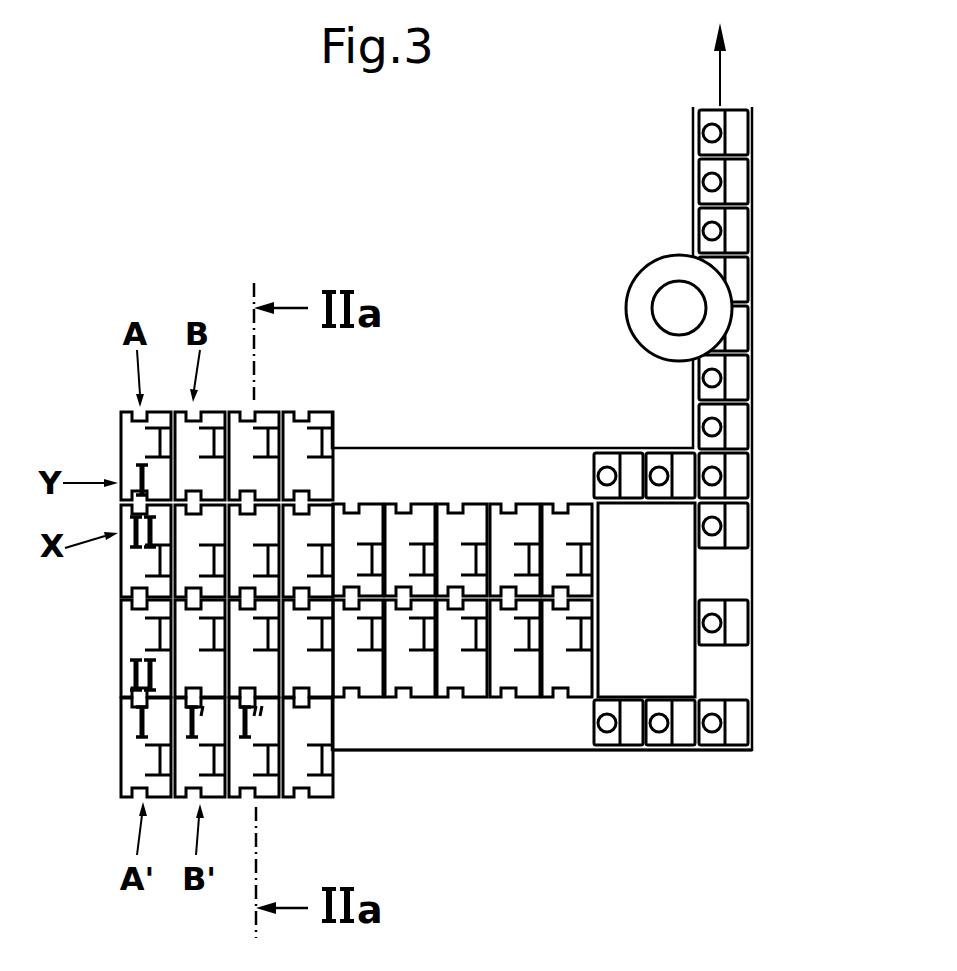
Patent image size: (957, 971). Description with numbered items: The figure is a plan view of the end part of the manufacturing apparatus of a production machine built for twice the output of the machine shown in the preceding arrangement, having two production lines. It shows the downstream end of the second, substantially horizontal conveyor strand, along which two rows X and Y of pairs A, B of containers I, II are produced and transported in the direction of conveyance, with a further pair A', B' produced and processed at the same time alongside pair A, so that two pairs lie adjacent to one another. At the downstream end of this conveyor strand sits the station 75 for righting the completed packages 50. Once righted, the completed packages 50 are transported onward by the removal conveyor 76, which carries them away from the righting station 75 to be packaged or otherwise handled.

The completed package 50 is at (458, 677).
The station for righting the completed packages 75 is at (668, 655).
The removal conveyor 76 is at (761, 282).